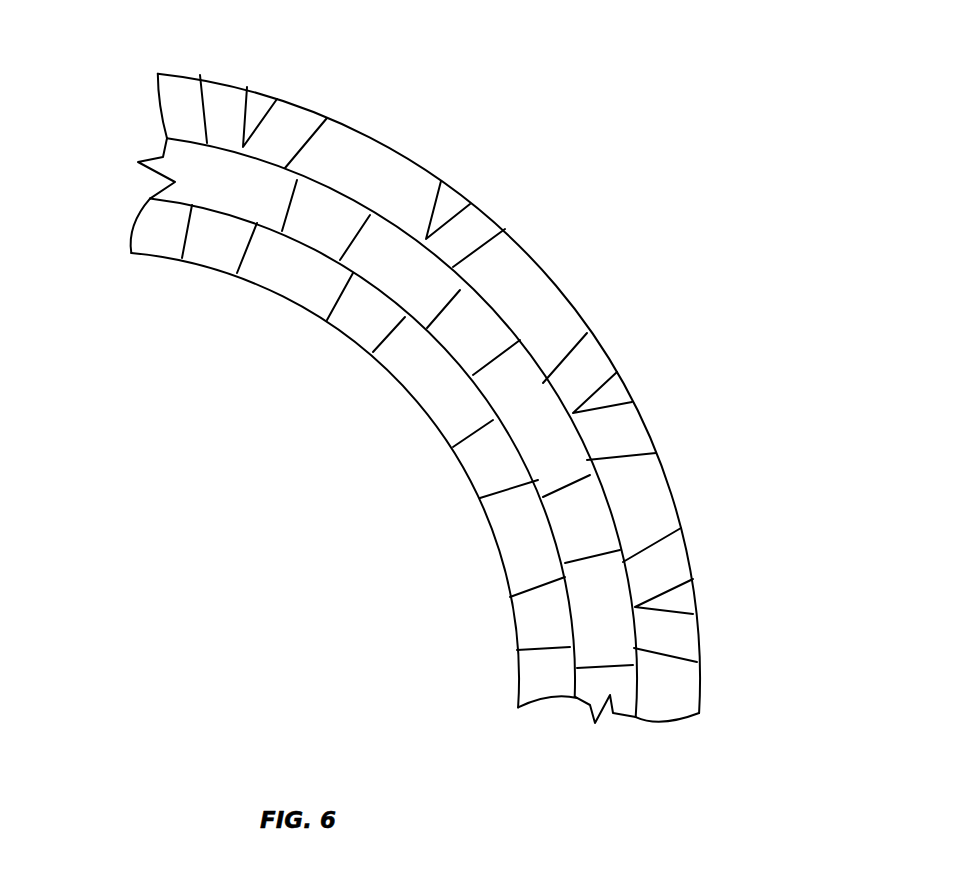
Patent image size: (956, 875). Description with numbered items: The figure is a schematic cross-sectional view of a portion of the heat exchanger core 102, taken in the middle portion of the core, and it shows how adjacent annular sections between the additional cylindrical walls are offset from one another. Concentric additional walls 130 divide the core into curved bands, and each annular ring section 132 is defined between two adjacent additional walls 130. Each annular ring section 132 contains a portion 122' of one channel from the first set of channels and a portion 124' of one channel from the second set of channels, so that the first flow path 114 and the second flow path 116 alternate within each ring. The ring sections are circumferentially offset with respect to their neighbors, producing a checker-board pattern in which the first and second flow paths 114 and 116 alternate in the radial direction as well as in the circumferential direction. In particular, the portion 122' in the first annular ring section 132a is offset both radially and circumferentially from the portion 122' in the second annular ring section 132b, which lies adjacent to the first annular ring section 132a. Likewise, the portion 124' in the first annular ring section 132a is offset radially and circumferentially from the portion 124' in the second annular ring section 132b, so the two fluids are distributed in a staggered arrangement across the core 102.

The heat exchanger core 102 is at (752, 668).
The first flow path 114 is at (220, 86).
The second flow path 116 is at (199, 163).
The portion of channel from first set of channels 122' is at (468, 344).
The portion of channel from second set of channels 124' is at (441, 492).
The additional walls 130 is at (498, 330).
The annular ring section 132 is at (388, 257).
The first annular ring section 132a is at (260, 187).
The second annular ring section 132b is at (157, 243).